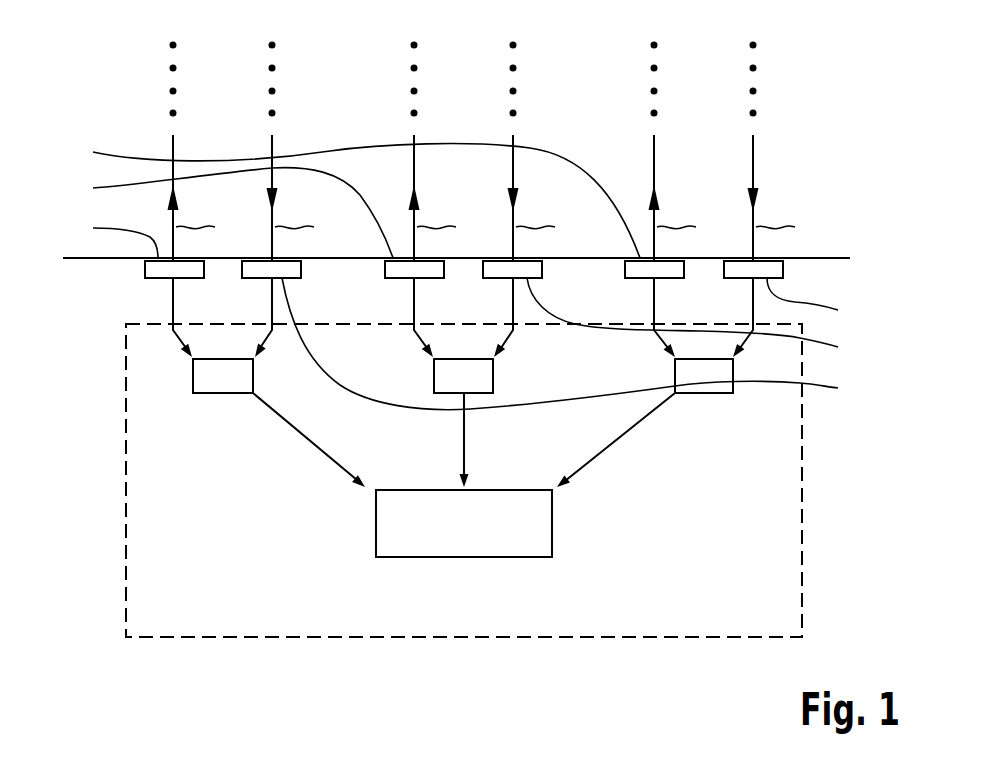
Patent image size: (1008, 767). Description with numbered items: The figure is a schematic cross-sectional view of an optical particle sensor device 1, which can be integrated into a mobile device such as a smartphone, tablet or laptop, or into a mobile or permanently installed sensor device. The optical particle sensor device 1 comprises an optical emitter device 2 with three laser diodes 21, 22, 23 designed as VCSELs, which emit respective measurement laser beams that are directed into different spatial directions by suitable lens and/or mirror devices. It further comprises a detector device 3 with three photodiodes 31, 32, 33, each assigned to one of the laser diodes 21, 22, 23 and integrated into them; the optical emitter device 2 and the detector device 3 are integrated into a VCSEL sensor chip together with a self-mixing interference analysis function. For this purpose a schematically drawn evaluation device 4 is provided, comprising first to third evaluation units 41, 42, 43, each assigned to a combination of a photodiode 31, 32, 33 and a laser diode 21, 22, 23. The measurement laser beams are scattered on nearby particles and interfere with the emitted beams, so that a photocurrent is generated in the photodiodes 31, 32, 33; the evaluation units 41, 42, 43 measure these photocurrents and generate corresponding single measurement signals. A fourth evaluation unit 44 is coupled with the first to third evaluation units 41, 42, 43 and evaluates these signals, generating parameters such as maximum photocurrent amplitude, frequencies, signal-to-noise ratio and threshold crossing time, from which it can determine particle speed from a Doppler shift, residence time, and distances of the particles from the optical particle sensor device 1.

The optical particle sensor device 1 is at (134, 107).
The optical emitter device 2 is at (58, 133).
The laser diode 21 is at (110, 236).
The laser diode 22 is at (228, 213).
The laser diode 23 is at (351, 197).
The detector device 3 is at (867, 290).
The photodiode 31 is at (574, 344).
The photodiode 32 is at (696, 321).
The photodiode 33 is at (816, 302).
The evaluation device 4 is at (126, 431).
The first evaluation unit 41 is at (223, 393).
The second evaluation unit 42 is at (493, 377).
The third evaluation unit 43 is at (705, 393).
The fourth evaluation unit 44 is at (552, 522).